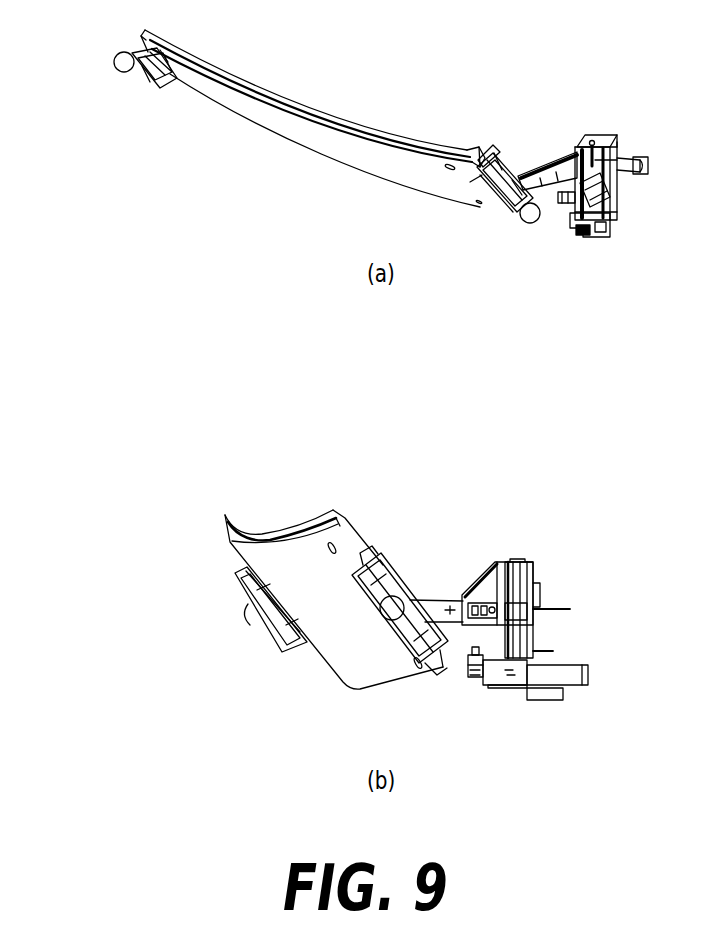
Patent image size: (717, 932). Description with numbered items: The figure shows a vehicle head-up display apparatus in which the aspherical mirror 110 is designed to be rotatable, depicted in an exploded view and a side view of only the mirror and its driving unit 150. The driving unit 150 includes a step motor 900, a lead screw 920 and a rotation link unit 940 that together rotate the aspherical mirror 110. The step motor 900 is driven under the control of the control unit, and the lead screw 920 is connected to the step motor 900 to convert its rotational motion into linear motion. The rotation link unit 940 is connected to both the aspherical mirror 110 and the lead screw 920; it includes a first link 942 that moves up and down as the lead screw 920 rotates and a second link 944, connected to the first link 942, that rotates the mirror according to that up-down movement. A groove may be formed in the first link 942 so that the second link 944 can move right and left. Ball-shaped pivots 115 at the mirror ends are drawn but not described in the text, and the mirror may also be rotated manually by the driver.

The aspherical mirror 110 is at (383, 138).
The ball joint 115 is at (114, 62).
The driving unit 150 is at (590, 138).
The step motor 900 is at (500, 685).
The lead screw 920 is at (520, 574).
The rotation link unit 940 is at (379, 581).
The first link 942 is at (470, 597).
The second link 944 is at (393, 580).